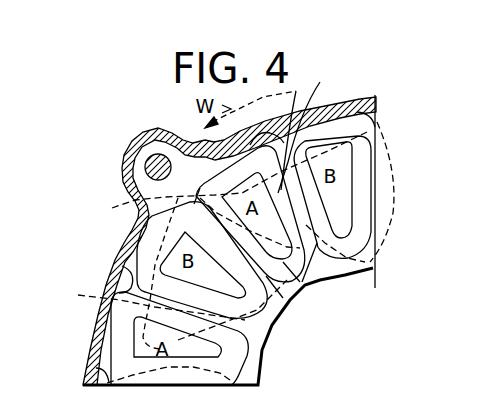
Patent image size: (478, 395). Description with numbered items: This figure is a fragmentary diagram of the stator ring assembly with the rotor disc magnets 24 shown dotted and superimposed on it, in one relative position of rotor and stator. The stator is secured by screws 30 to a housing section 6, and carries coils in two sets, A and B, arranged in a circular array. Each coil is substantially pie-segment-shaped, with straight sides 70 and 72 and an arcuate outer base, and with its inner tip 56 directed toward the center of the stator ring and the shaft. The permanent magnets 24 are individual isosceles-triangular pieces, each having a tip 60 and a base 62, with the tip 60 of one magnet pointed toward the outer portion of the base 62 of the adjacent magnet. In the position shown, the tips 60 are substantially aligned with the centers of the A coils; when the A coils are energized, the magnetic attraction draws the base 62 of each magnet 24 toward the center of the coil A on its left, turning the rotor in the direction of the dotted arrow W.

The housing section 6 is at (120, 245).
The permanent magnet 24 is at (410, 137).
The screw 30 is at (145, 168).
The inner tip 56 is at (313, 281).
The tip 60 is at (227, 175).
The base 62 is at (399, 192).
The straight side 70 is at (279, 298).
The straight side 72 is at (306, 135).